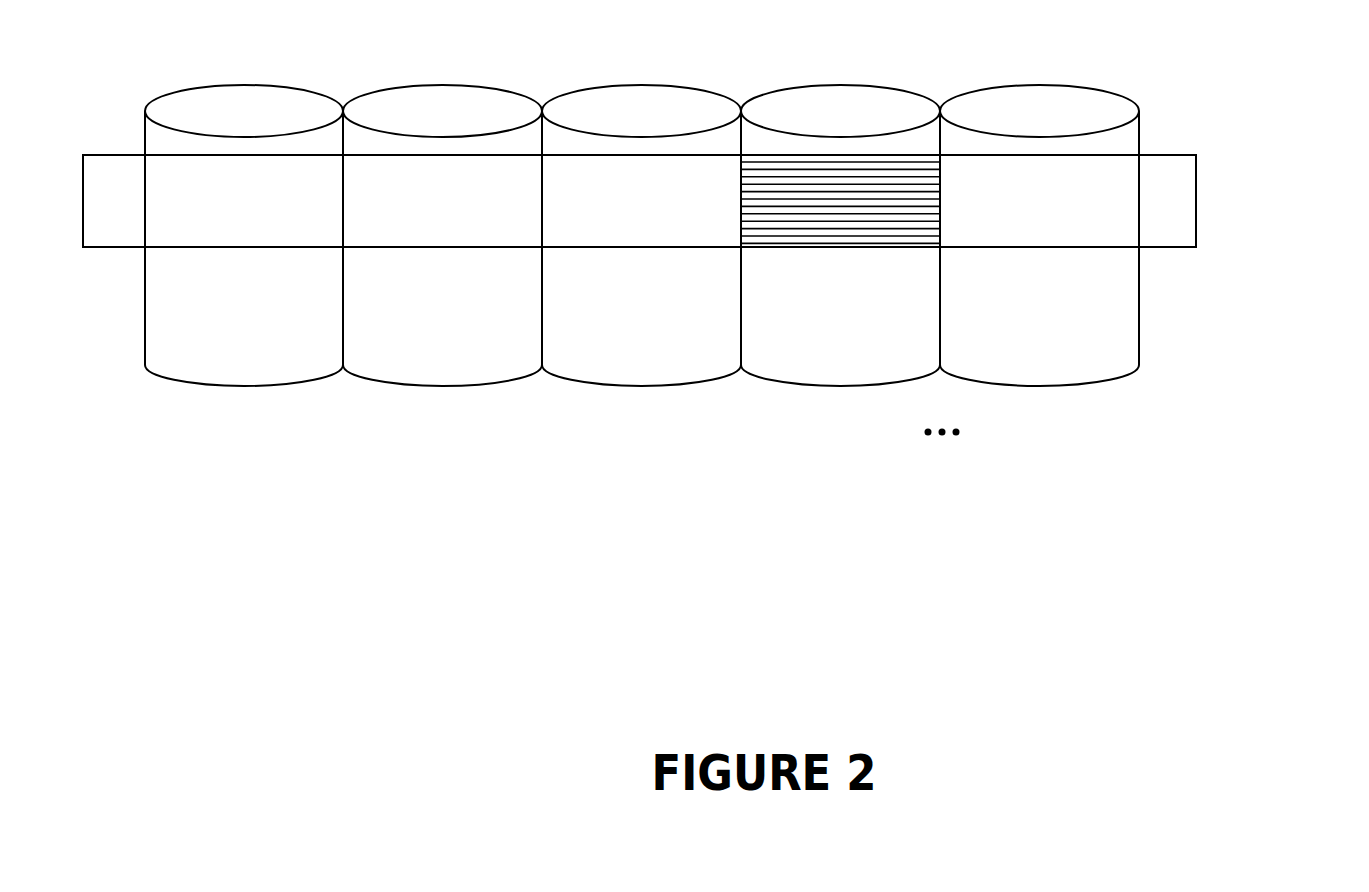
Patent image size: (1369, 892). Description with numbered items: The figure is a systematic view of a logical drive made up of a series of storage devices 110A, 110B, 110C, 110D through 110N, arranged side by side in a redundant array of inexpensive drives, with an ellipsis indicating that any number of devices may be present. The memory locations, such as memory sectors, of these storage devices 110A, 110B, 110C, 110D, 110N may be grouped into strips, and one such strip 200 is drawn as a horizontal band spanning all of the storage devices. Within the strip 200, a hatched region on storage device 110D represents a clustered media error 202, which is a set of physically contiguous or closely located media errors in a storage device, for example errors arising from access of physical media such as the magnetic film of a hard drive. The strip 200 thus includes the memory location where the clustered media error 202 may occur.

The storage device 110A is at (244, 385).
The storage device 110B is at (443, 385).
The storage device 110C is at (641, 385).
The storage device 110D is at (840, 385).
The storage device 110N is at (1040, 385).
The strip 200 is at (1193, 200).
The clustered media error 202 is at (921, 162).